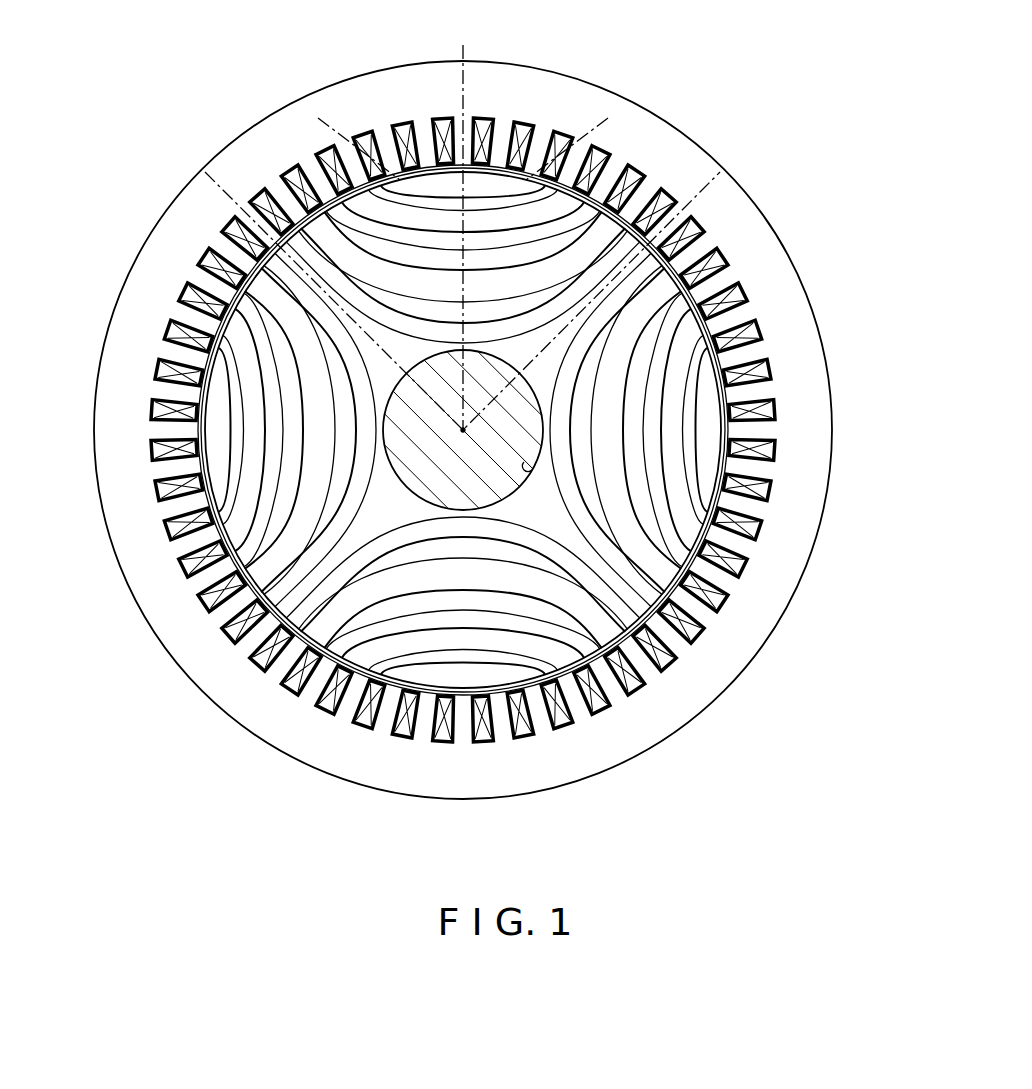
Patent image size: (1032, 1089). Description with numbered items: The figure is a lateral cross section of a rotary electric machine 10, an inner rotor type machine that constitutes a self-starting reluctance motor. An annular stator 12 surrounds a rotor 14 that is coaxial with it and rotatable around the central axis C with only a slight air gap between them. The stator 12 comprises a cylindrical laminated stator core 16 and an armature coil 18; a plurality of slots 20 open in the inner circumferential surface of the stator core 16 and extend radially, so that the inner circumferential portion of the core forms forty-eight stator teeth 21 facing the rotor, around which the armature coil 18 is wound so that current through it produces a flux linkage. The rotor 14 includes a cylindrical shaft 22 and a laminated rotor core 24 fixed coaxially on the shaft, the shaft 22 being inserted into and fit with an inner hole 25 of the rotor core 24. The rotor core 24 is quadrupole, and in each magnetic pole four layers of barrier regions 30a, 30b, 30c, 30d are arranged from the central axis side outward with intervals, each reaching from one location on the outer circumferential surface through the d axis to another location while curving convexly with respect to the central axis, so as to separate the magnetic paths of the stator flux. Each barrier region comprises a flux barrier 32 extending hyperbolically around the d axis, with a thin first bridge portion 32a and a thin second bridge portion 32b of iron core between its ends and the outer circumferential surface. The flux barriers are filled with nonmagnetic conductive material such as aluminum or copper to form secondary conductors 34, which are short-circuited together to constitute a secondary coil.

The rotary electric machine 10 is at (190, 55).
The stator 12 is at (467, 425).
The rotor 14 is at (615, 195).
The stator core 16 is at (648, 742).
The armature coil 18 is at (388, 140).
The slots 20 is at (372, 150).
The stator teeth 21 is at (444, 145).
The shaft 22 is at (410, 465).
The rotor core 24 is at (475, 380).
The inner hole 25 is at (530, 472).
The barrier region 30a is at (293, 232).
The barrier region 30b is at (311, 218).
The barrier region 30c is at (335, 204).
The barrier region 30d is at (378, 183).
The flux barrier 32 is at (503, 248).
The first bridge portion 32a is at (705, 515).
The second bridge portion 32b is at (720, 455).
The secondary conductor 34 is at (527, 215).